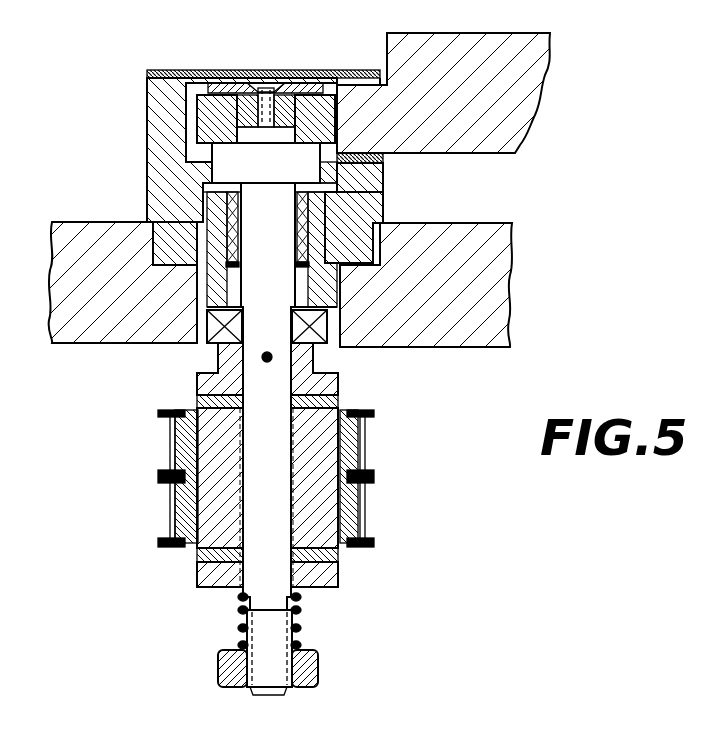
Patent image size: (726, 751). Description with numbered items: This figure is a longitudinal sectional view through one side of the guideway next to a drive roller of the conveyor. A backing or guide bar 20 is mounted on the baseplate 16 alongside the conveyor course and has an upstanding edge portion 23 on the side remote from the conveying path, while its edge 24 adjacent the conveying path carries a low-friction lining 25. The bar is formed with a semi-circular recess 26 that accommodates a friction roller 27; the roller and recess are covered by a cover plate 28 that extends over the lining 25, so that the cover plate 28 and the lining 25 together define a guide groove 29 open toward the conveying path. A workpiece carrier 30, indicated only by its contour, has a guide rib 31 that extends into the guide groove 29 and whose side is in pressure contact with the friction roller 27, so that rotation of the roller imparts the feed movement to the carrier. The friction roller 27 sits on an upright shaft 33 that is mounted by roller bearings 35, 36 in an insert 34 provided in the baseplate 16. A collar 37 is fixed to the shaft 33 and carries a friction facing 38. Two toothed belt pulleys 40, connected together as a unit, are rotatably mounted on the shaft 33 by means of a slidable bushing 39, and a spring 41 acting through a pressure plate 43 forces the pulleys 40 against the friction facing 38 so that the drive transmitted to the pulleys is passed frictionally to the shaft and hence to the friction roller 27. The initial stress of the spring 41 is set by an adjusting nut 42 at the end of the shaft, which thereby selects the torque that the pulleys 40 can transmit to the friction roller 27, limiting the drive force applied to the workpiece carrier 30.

The baseplate 16 is at (472, 285).
The guide bar 20 is at (319, 352).
The upstanding edge portion 23 is at (170, 150).
The edge 24 is at (358, 202).
The low-friction lining 25 is at (383, 158).
The semi-circular recess 26 is at (196, 118).
The friction roller 27 is at (228, 128).
The cover plate 28 is at (210, 68).
The guide groove 29 is at (350, 70).
The workpiece carrier 30 is at (505, 80).
The guide rib 31 is at (357, 117).
The upright shaft 33 is at (262, 445).
The insert 34 is at (352, 242).
The roller bearing 35 is at (227, 213).
The roller bearing 36 is at (310, 328).
The collar 37 is at (330, 385).
The friction facing 38 is at (210, 398).
The slidable bushing 39 is at (307, 513).
The toothed belt pulley 40 is at (187, 507).
The spring 41 is at (300, 627).
The adjusting nut 42 is at (233, 667).
The pressure plate 43 is at (212, 574).